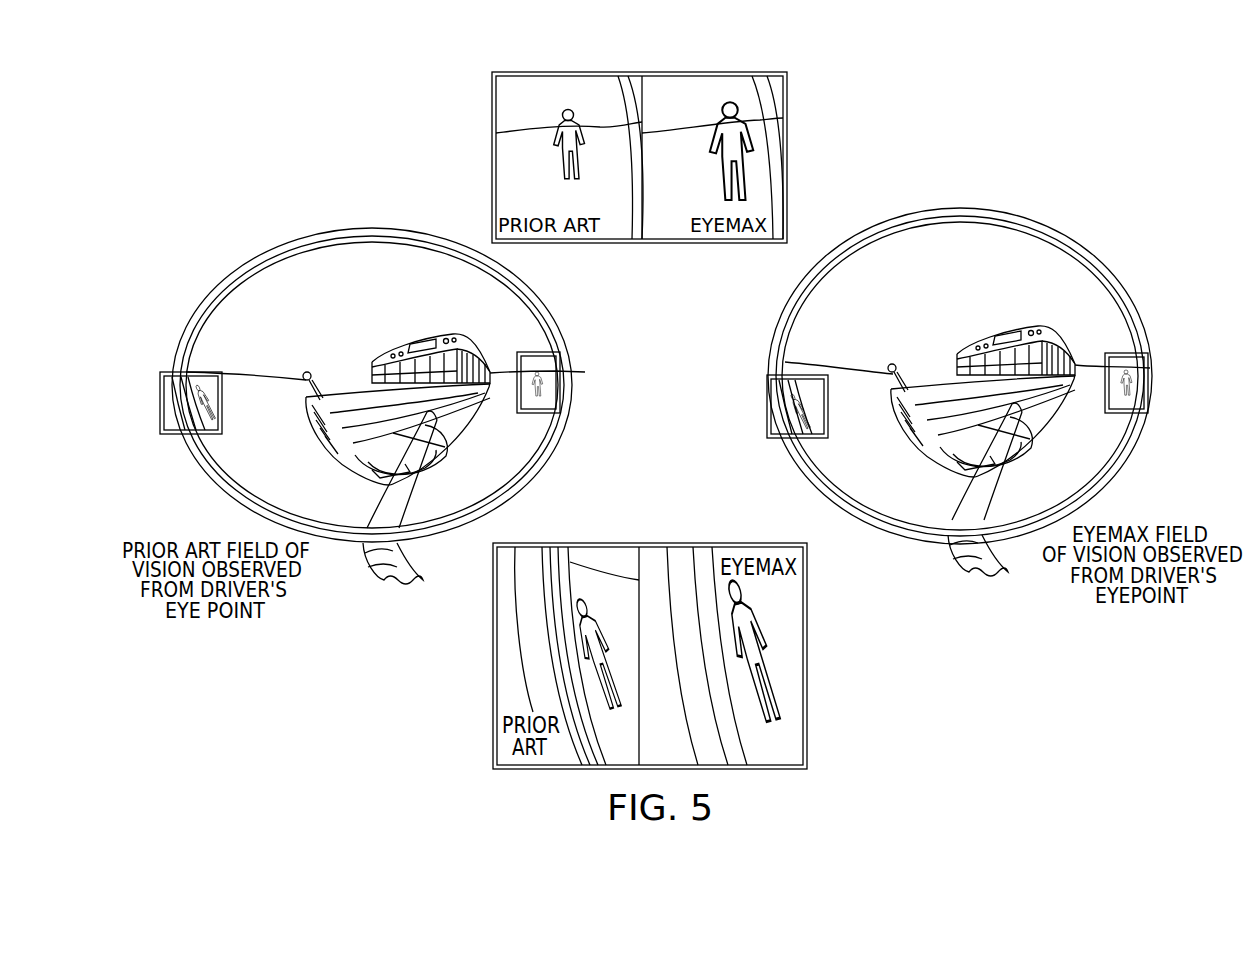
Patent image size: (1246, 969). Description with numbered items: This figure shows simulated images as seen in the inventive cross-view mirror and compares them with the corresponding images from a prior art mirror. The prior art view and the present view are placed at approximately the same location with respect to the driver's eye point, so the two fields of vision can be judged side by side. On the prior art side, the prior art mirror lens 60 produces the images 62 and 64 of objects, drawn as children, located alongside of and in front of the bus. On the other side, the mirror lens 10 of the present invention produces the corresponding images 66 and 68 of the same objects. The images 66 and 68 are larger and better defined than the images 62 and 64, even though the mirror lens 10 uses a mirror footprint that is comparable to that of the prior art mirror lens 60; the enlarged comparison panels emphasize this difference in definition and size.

The mirror lens 10 is at (898, 503).
The prior art mirror lens 60 is at (333, 517).
The image 62 is at (195, 418).
The image 64 is at (545, 388).
The image 66 is at (792, 428).
The image 68 is at (1130, 388).